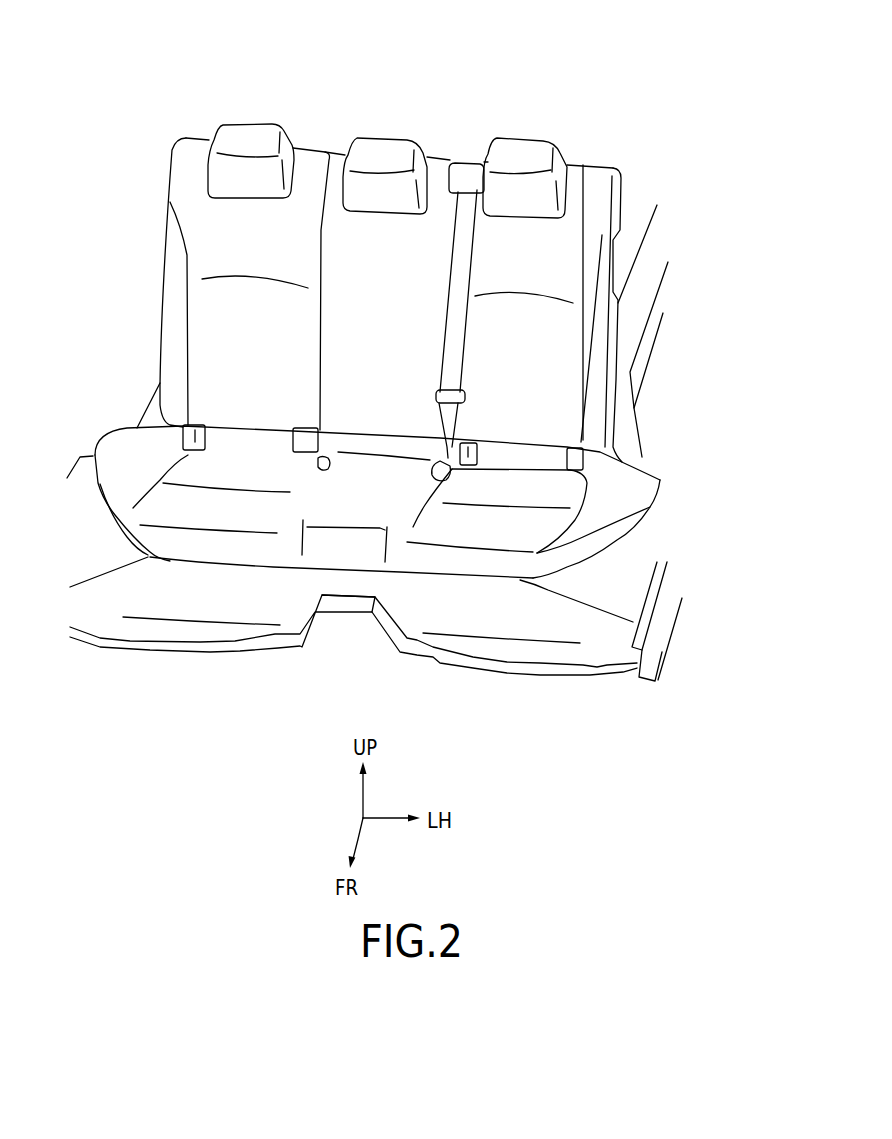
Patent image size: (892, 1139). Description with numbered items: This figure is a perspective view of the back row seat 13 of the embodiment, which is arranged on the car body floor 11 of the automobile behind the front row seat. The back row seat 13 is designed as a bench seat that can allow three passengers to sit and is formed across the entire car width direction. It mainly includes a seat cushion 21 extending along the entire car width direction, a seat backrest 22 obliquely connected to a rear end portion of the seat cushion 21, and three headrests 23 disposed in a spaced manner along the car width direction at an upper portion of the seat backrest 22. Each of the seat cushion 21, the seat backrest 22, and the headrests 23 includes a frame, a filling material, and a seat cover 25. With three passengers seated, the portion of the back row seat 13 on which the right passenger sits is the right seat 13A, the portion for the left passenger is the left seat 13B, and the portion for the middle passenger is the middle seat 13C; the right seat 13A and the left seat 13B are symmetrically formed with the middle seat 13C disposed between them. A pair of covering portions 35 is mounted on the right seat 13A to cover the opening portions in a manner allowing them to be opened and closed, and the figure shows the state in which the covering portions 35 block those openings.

The car body floor 11 is at (643, 635).
The back row seat 13 is at (589, 151).
The right seat 13A is at (168, 135).
The left seat 13B is at (631, 163).
The middle seat 13C is at (447, 141).
The seat cushion 21 is at (188, 507).
The seat backrest 22 is at (220, 257).
The headrest 23 is at (266, 133).
The seat cover 25 is at (240, 135).
The covering portion 35 is at (308, 432).